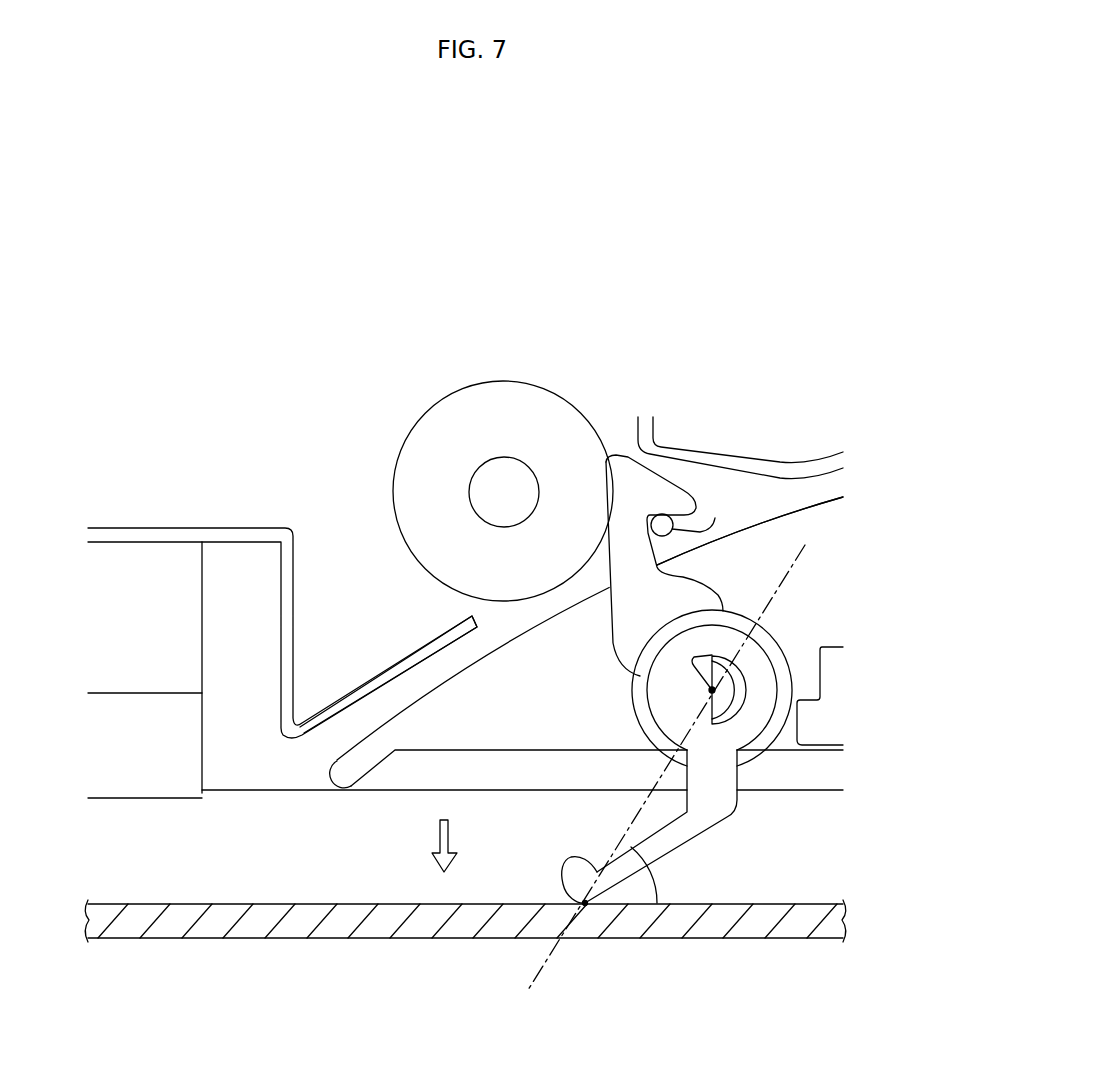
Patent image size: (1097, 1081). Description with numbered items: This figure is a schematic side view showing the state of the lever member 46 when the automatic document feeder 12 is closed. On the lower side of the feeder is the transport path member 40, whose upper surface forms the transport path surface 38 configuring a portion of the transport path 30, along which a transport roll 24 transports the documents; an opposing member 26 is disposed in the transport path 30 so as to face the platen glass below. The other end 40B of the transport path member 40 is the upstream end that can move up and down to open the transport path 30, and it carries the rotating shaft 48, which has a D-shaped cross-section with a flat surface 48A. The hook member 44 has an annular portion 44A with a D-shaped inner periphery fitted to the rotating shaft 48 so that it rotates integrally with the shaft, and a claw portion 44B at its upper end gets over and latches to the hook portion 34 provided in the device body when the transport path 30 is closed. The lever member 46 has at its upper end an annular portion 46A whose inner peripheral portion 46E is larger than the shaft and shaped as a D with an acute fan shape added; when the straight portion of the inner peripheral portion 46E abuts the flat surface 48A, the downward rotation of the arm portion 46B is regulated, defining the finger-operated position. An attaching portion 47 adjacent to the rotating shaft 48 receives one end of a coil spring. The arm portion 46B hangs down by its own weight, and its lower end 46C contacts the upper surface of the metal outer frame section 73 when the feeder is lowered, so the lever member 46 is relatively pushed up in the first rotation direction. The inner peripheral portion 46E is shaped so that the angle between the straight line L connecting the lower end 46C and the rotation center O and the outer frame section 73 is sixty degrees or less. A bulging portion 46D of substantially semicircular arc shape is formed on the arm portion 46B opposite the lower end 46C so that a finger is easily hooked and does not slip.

The automatic document feeder 12 is at (560, 232).
The transport roll 24 is at (488, 381).
The opposing member 26 is at (120, 575).
The transport path 30 is at (343, 733).
The hook portion 34 is at (715, 518).
The transport path surface 38 is at (797, 505).
The transport path member 40 is at (441, 683).
The other end 40B is at (357, 771).
The hook member 44 is at (616, 455).
The annular portion 44A is at (766, 628).
The claw portion 44B is at (690, 500).
The lever member 46 is at (727, 818).
The annular portion 46A is at (778, 680).
The arm portion 46B is at (690, 837).
The lower end 46C is at (585, 906).
The bulging portion 46D is at (577, 857).
The inner peripheral portion 46E is at (705, 652).
The attaching portion 47 is at (832, 647).
The rotating shaft 48 is at (752, 760).
The flat surface 48A is at (710, 690).
The outer frame section 73 is at (323, 939).
The rotation center O is at (710, 692).
The straight line L is at (812, 546).